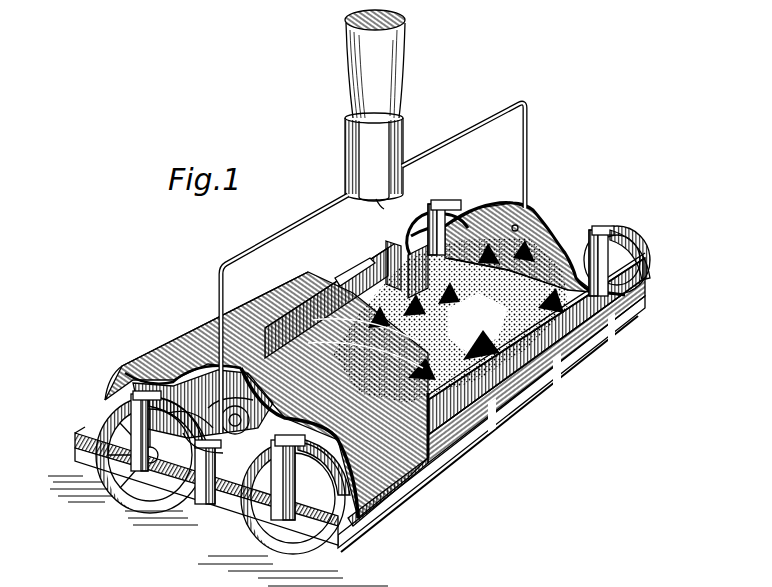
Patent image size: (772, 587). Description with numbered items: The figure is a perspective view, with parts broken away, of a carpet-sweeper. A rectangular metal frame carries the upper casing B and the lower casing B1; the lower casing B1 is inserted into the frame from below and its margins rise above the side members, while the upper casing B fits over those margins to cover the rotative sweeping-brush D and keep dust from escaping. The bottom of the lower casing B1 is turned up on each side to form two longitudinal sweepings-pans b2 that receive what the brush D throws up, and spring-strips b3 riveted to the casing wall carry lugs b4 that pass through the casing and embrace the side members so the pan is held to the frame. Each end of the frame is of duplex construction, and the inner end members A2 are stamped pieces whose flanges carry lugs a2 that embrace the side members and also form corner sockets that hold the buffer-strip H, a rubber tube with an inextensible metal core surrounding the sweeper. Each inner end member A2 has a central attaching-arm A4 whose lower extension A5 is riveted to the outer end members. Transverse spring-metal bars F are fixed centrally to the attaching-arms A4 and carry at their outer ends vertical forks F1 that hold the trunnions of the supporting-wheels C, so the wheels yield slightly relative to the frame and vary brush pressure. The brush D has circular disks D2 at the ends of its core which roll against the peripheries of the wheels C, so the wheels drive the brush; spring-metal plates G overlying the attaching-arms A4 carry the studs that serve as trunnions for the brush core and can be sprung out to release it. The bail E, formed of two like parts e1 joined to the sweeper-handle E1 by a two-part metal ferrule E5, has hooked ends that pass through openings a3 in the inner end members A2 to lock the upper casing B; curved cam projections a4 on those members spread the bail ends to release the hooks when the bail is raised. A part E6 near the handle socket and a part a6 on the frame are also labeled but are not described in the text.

The upper casing B is at (266, 395).
The lower casing B1 is at (372, 524).
The supporting-wheels C is at (448, 214).
The rotative sweeping-brush D is at (540, 238).
The circular disks D2 is at (195, 500).
The bail E is at (313, 187).
The sweeper-handle E1 is at (384, 60).
The two-part metal ferrule E5 is at (382, 134).
The handle tip E6 is at (374, 199).
The bail parts e1 is at (466, 128).
The spring-metal bars F is at (312, 410).
The forks F1 is at (606, 224).
The spring-metal plates G is at (195, 470).
The buffer-strip H is at (300, 556).
The inner end members A2 is at (515, 205).
The attaching-arm A4 is at (207, 485).
The extensions A5 is at (185, 470).
The lugs a2 is at (395, 530).
The openings a3 is at (511, 218).
The cam projections a4 is at (255, 370).
The hood edge a6 is at (232, 372).
The sweepings-pans b2 is at (548, 358).
The spring-strips b3 is at (348, 264).
The lugs b4 is at (600, 312).